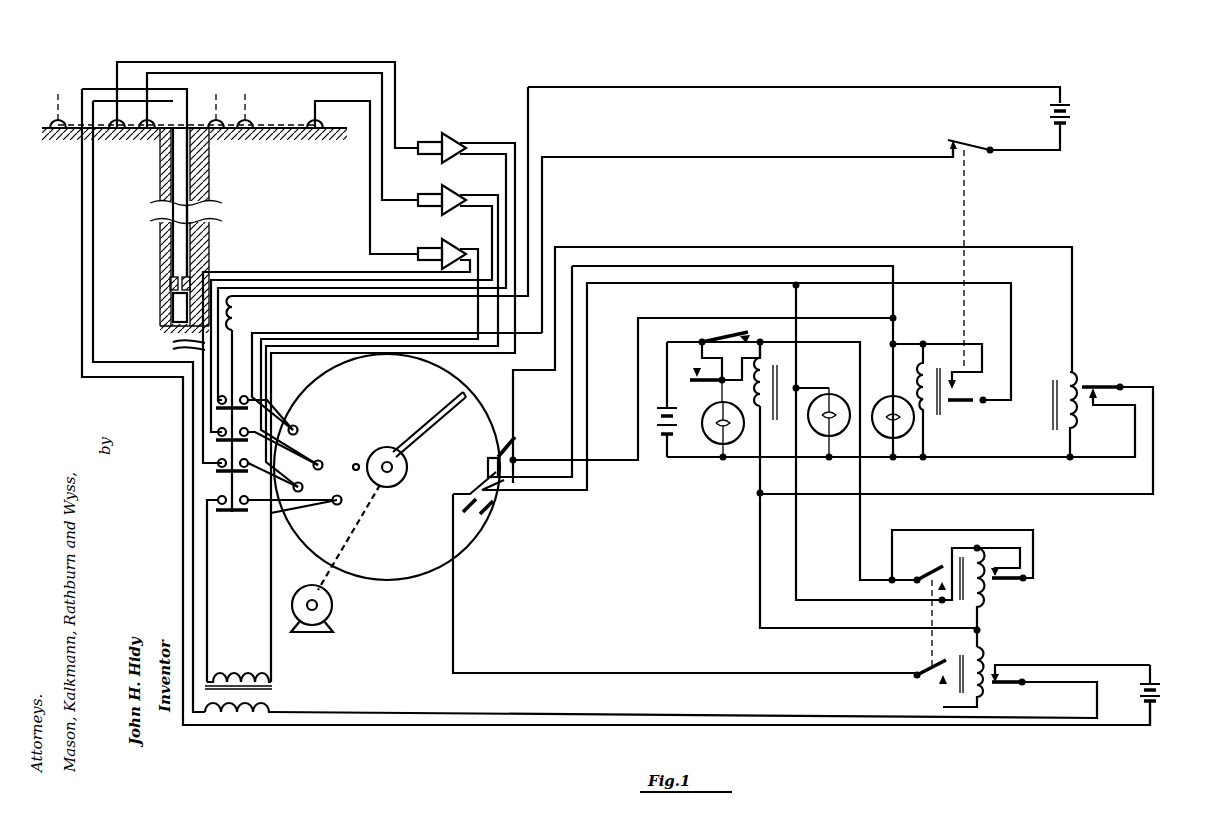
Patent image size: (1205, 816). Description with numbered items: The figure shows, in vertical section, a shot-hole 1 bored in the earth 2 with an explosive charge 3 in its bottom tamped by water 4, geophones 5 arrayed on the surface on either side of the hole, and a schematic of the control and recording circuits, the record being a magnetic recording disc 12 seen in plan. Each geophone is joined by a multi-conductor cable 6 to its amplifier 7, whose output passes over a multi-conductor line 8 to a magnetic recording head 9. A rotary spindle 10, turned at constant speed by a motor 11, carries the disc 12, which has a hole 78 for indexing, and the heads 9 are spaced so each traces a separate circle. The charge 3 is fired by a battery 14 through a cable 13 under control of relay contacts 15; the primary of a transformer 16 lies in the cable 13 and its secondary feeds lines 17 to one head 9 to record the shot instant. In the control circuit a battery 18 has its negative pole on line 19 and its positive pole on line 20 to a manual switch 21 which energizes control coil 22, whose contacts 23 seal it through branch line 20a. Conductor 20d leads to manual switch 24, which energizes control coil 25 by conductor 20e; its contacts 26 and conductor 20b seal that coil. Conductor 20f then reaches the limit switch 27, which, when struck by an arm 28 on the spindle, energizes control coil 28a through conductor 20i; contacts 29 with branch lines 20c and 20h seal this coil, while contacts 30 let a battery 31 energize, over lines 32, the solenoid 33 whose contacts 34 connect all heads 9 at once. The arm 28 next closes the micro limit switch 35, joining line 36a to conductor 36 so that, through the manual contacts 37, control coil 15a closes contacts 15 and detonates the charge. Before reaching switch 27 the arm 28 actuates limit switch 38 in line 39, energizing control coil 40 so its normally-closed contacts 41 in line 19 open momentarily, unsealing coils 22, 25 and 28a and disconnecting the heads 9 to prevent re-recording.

The shot-hole 1 is at (190, 171).
The earth 2 is at (256, 161).
The explosive charge 3 is at (171, 302).
The water 4 is at (170, 280).
The geophones 5 is at (68, 123).
The multi-conductor cable 6 is at (238, 60).
The amplifier 7 is at (448, 199).
The multi-conductor line 8 is at (490, 147).
The magnetic recording head 9 is at (312, 445).
The rotary spindle 10 is at (392, 443).
The motor 11 is at (338, 599).
The magnetic recording disc 12 is at (402, 570).
The multi-conductor cable 13 is at (112, 94).
The battery 14 is at (1152, 687).
The relay contacts 15 is at (1018, 648).
The control coil 15a is at (984, 692).
The transformer 16 is at (298, 672).
The lines 17 is at (236, 600).
The battery 18 is at (664, 452).
The line 19 is at (703, 470).
The line 20 is at (666, 382).
The branch line 20a is at (696, 356).
The conductor 20b is at (1020, 530).
The branch line 20c is at (1012, 288).
The conductor 20d is at (860, 358).
The conductor 20e is at (959, 546).
The conductor 20f is at (647, 282).
The branch line 20h is at (942, 338).
The conductor 20i is at (638, 379).
The manually controlled switch 21 is at (732, 327).
The control coil 22 is at (774, 424).
The contacts 23 is at (686, 376).
The manually operated switch 24 is at (926, 570).
The control coil 25 is at (982, 598).
The contacts 26 is at (1016, 584).
The limit switch 27 is at (490, 514).
The arm 28 is at (450, 403).
The control coil 28a is at (924, 366).
The contacts 29 is at (960, 395).
The contacts 30 is at (954, 125).
The battery 31 is at (1072, 120).
The lines 32 is at (335, 332).
The solenoid 33 is at (240, 313).
The contacts 34 is at (214, 418).
The micro limit switch 35 is at (468, 514).
The conductor 36 is at (893, 270).
The line 36a is at (467, 595).
The contacts 37 is at (924, 682).
The limit switch 38 is at (486, 462).
The line 39 is at (506, 438).
The control coil 40 is at (1078, 374).
The contacts 41 is at (1088, 406).
The hole 78 is at (356, 450).